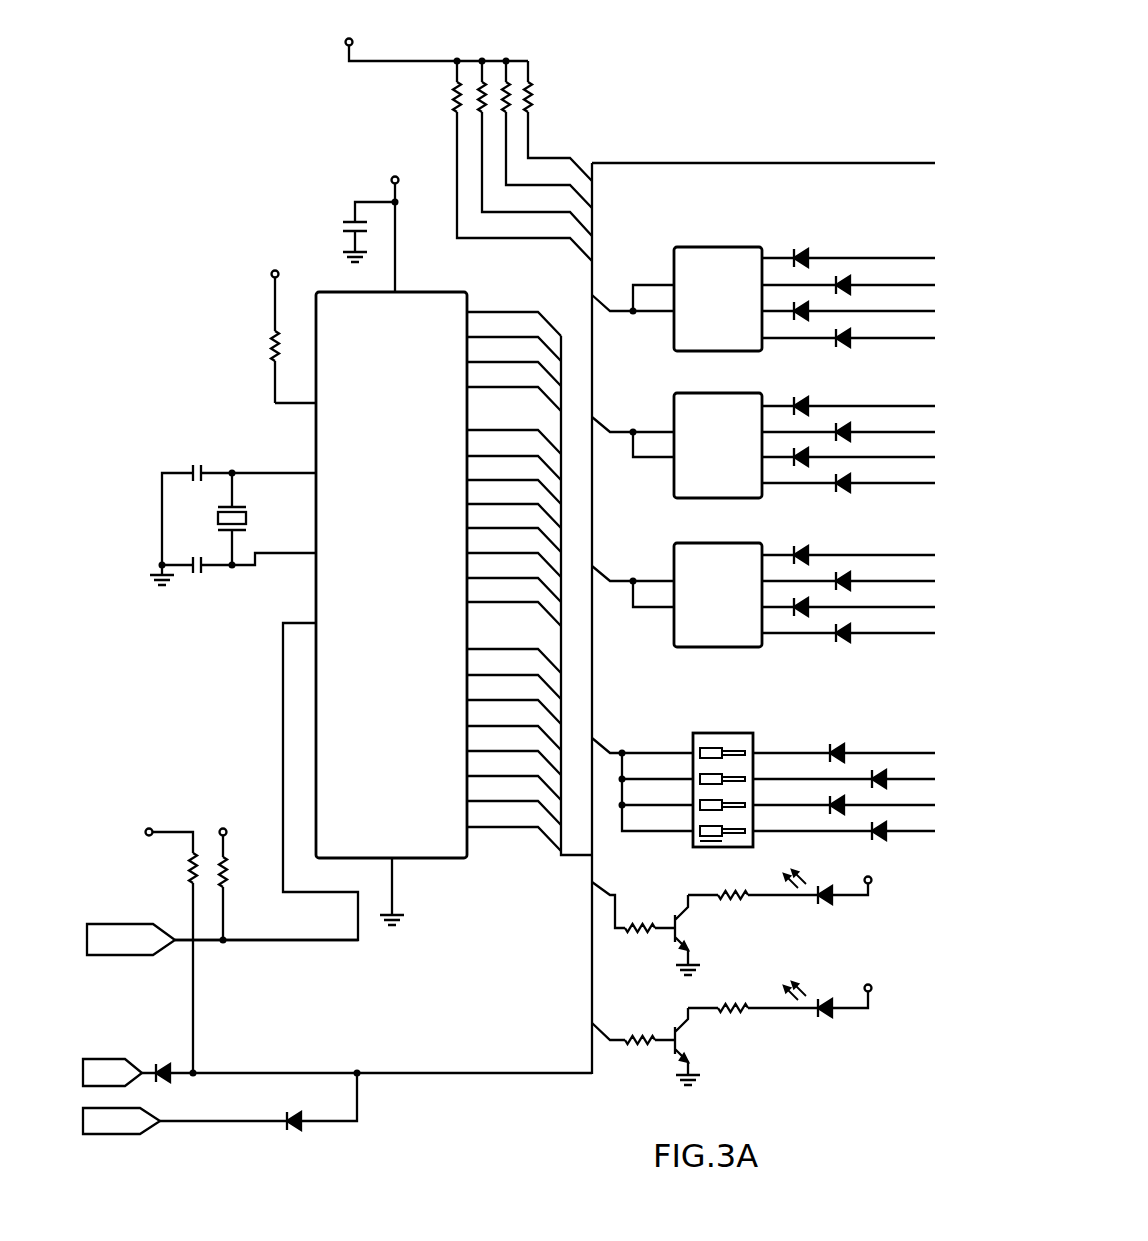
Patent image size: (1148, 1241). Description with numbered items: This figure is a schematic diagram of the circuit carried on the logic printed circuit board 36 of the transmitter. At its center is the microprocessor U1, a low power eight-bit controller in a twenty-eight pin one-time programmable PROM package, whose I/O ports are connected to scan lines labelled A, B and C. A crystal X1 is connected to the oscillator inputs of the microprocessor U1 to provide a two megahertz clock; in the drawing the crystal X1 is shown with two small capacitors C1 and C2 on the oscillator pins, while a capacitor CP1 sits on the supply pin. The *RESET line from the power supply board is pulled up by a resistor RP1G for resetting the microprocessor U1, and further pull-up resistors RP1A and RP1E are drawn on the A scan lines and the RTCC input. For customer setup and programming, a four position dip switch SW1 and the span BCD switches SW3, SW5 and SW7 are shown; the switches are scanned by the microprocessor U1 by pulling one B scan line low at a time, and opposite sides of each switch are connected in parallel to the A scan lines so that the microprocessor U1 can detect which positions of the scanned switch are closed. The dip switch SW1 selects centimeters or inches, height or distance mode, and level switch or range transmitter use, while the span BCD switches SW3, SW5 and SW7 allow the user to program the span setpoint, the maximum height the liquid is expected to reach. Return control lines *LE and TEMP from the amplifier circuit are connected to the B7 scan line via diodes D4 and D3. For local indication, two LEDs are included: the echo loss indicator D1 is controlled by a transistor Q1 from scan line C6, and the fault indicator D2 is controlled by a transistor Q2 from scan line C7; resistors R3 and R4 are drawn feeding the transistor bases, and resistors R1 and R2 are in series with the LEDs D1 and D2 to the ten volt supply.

The logic printed circuit board 36 is at (533, 1114).
The microprocessor U1 is at (438, 561).
The pull-up resistor pack section RP1A is at (524, 100).
The pull-up resistor RP1E is at (243, 343).
The resistor RP1G is at (236, 870).
The decoupling capacitor CP1 is at (324, 226).
The crystal load capacitor C1 is at (148, 481).
The crystal load capacitor C2 is at (147, 575).
The crystal X1 is at (247, 553).
The span BCD switch SW7 is at (762, 296).
The span BCD switch SW5 is at (762, 444).
The span BCD switch SW3 is at (762, 592).
The four position dip switch SW1 is at (757, 788).
The LED resistor R1 is at (734, 893).
The LED resistor R2 is at (734, 1005).
The base resistor R3 is at (639, 925).
The base resistor R4 is at (640, 1040).
The transistor Q1 is at (678, 932).
The transistor Q2 is at (677, 1039).
The LED D1 is at (842, 892).
The LED D2 is at (830, 1009).
The diode D3 is at (298, 1107).
The diode D4 is at (163, 1056).